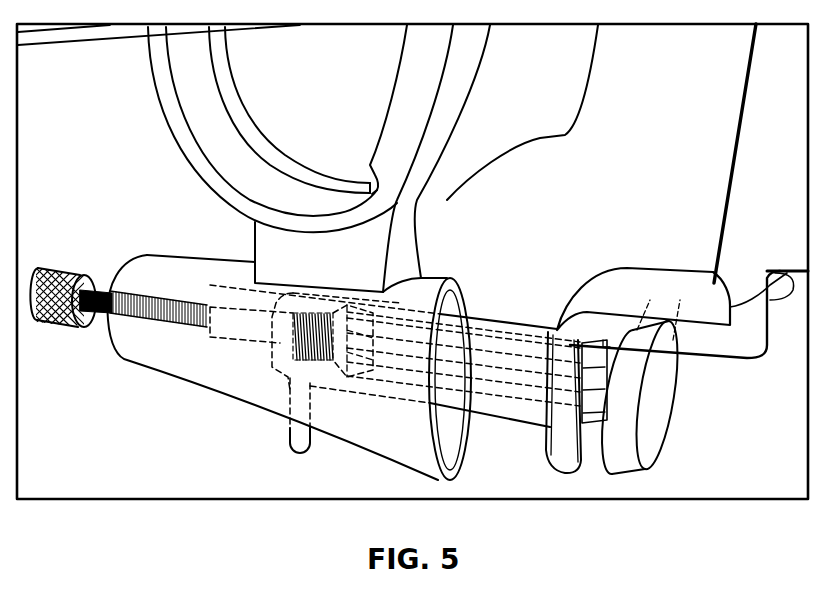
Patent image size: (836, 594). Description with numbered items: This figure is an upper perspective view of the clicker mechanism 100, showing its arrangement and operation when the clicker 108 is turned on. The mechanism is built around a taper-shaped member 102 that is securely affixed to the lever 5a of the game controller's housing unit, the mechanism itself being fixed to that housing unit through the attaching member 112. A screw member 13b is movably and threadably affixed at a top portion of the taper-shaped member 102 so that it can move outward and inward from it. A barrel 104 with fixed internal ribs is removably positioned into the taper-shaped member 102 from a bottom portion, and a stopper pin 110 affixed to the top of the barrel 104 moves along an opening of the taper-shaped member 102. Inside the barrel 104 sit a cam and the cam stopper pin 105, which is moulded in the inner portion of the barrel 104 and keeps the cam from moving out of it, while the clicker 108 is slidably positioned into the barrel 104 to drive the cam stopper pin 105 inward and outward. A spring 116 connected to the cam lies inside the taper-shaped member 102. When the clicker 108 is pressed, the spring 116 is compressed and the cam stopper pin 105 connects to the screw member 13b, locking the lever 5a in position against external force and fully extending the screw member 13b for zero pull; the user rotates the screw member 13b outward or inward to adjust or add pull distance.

The lever 5a is at (168, 87).
The screw member 13b is at (58, 272).
The clicker mechanism 100 is at (126, 437).
The taper-shaped member 102 is at (257, 406).
The barrel 104 is at (498, 343).
The cam stopper pin 105 is at (230, 337).
The clicker 108 is at (650, 425).
The stopper pin 110 is at (300, 452).
The attaching member 112 is at (645, 287).
The spring 116 is at (297, 333).